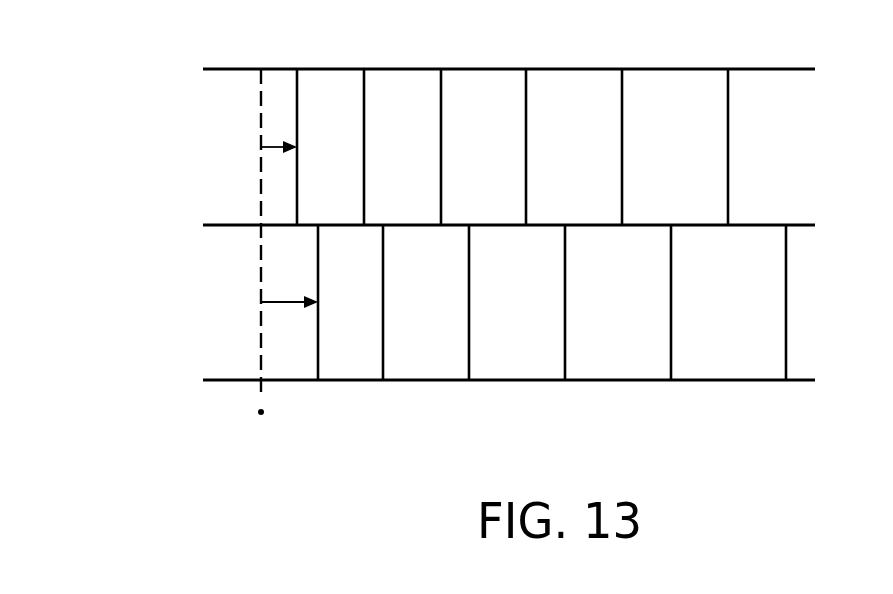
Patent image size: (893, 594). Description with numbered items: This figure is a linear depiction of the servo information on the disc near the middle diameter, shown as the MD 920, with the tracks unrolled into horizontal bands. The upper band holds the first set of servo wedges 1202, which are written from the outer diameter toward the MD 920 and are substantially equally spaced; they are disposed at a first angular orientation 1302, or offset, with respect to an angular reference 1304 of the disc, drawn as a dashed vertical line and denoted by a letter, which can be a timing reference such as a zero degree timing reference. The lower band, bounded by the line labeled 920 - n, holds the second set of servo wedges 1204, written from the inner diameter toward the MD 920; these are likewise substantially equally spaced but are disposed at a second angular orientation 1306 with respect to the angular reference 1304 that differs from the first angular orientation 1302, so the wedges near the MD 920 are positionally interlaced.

The MD 920 is at (220, 225).
The scan line 920-n 920 - n is at (220, 379).
The first set of servo wedges 1202 is at (528, 127).
The second set of servo wedges 1204 is at (566, 342).
The first angular orientation 1302 is at (269, 145).
The angular reference 1304 is at (260, 264).
The second angular orientation 1306 is at (278, 304).